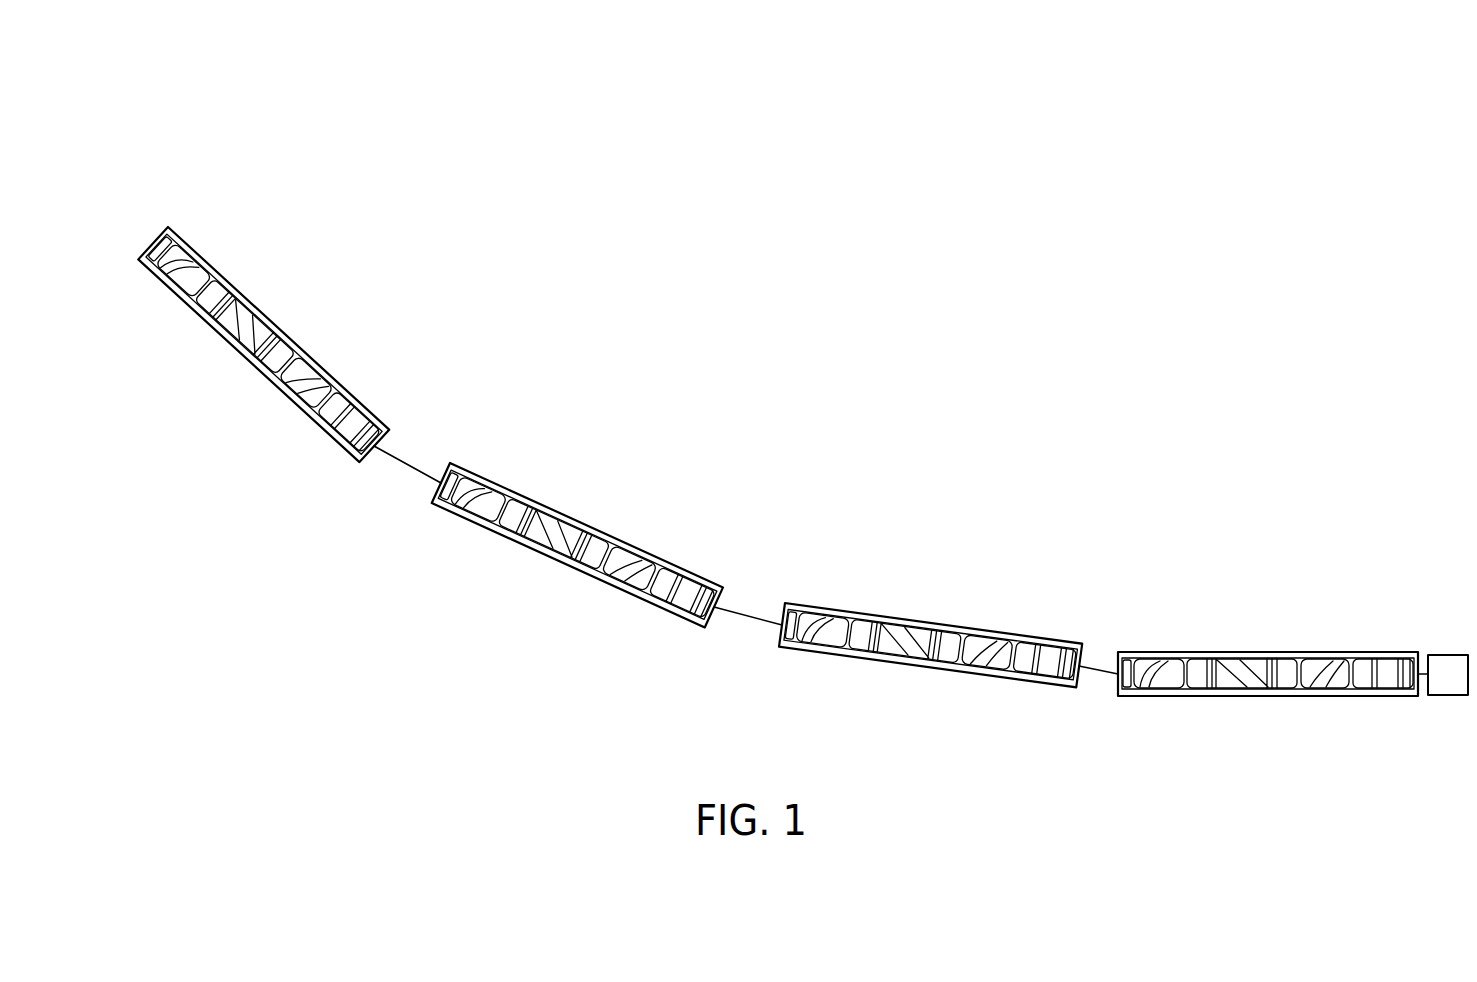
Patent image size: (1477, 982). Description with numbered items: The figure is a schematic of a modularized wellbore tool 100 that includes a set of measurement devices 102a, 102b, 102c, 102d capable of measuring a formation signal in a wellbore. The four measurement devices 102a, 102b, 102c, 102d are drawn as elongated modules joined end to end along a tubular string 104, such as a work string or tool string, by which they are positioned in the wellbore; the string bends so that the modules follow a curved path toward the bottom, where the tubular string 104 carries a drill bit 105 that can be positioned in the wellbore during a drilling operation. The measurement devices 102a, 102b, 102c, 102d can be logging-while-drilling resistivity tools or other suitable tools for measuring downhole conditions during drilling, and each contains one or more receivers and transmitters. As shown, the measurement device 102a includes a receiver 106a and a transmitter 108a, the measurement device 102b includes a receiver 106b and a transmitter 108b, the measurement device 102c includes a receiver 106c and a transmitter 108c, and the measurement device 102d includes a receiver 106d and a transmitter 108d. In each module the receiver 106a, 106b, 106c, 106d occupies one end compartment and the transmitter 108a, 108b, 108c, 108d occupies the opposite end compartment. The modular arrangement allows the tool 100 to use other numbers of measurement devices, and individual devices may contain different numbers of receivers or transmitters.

The modularized wellbore tool 100 is at (212, 112).
The measurement device 102a is at (360, 255).
The measurement device 102b is at (602, 456).
The measurement device 102c is at (969, 568).
The measurement device 102d is at (1344, 593).
The tubular string 104 is at (748, 608).
The drill bit 105 is at (1453, 688).
The receiver 106a is at (172, 277).
The receiver 106b is at (466, 508).
The receiver 106c is at (825, 640).
The receiver 106d is at (1166, 682).
The transmitter 108a is at (346, 428).
The transmitter 108b is at (687, 600).
The transmitter 108c is at (1047, 663).
The transmitter 108d is at (1388, 683).